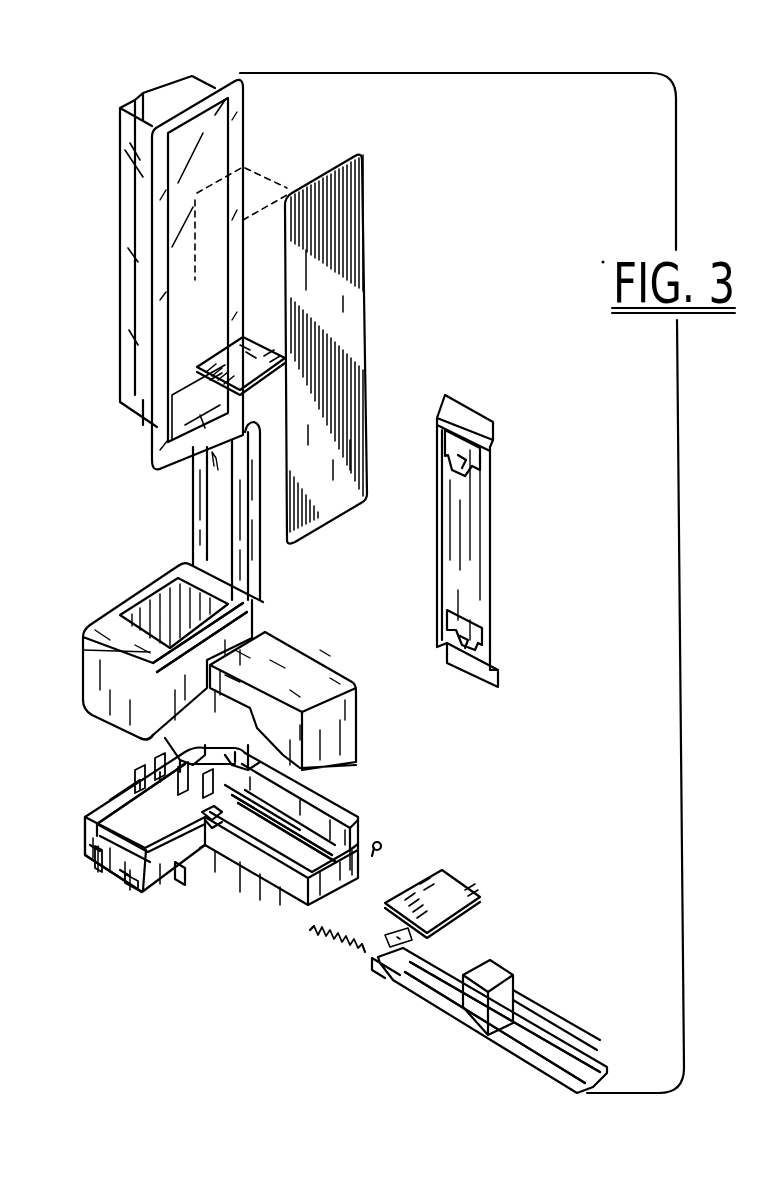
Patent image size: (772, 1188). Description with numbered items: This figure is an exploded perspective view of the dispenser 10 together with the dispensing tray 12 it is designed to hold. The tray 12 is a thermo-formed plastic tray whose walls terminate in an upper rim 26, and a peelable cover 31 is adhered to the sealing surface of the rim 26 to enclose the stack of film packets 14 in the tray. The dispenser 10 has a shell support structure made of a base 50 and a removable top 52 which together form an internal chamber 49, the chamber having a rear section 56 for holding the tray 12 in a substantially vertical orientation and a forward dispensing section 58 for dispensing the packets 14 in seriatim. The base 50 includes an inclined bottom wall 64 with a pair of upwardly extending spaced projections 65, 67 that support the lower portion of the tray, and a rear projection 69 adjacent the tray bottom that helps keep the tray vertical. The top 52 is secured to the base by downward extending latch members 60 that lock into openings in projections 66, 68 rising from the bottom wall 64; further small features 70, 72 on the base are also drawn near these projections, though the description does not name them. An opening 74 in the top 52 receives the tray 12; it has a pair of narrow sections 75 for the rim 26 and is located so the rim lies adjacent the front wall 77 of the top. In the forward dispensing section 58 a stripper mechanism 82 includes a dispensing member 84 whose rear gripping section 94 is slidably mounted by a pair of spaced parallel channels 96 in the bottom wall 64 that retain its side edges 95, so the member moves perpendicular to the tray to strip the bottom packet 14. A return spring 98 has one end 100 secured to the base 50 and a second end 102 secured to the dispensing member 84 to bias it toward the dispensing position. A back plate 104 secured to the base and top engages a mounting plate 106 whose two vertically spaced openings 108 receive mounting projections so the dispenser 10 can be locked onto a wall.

The dispenser 10 is at (533, 271).
The dispensing tray 12 is at (178, 92).
The film packets 14 is at (247, 340).
The upper rim 26 is at (243, 100).
The peelable cover 31 is at (353, 203).
The internal chamber 49 is at (135, 771).
The base 50 is at (318, 802).
The removable top 52 is at (320, 654).
The rear section 56 is at (100, 802).
The forward dispensing section 58 is at (357, 820).
The latch members 60 is at (162, 651).
The bottom wall 64 is at (212, 840).
The projection 65 is at (183, 872).
The projection 66 is at (113, 798).
The projection 67 is at (255, 765).
The projection 68 is at (176, 745).
The rear projection 69 is at (172, 726).
The opening 70 is at (204, 846).
The rib 72 is at (206, 832).
The opening 74 is at (160, 603).
The narrow sections 75 is at (83, 650).
The front wall 77 is at (250, 623).
The stripper mechanism 82 is at (478, 940).
The dispensing member 84 is at (455, 1027).
The gripping section 94 is at (560, 1033).
The side edges 95 is at (540, 1023).
The channels 96 is at (358, 882).
The return spring 98 is at (333, 945).
The spring end 100 is at (316, 948).
The spring end 102 is at (352, 963).
The back plate 104 is at (261, 566).
The mounting plate 106 is at (490, 452).
The openings 108 is at (463, 462).